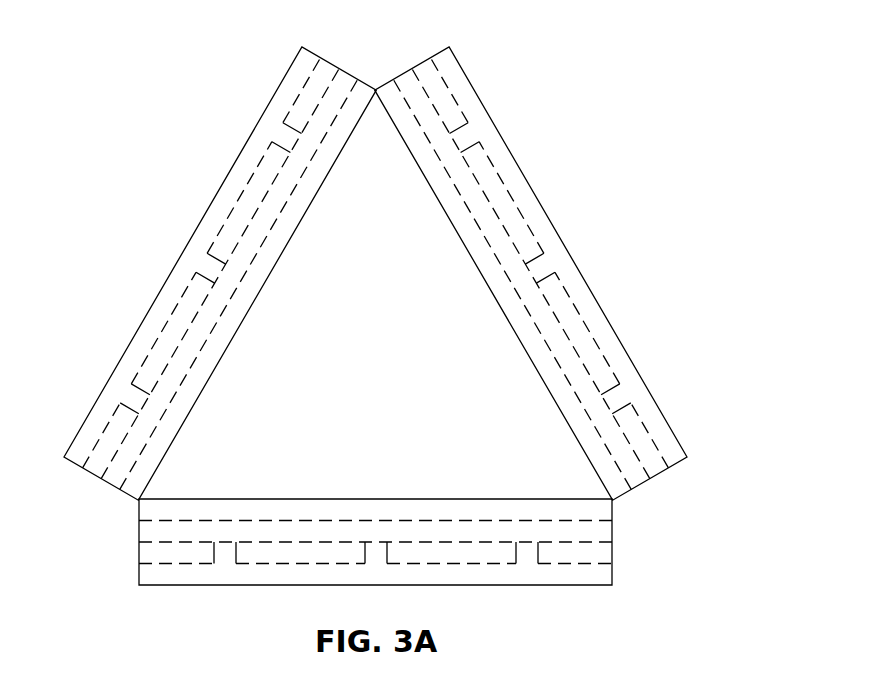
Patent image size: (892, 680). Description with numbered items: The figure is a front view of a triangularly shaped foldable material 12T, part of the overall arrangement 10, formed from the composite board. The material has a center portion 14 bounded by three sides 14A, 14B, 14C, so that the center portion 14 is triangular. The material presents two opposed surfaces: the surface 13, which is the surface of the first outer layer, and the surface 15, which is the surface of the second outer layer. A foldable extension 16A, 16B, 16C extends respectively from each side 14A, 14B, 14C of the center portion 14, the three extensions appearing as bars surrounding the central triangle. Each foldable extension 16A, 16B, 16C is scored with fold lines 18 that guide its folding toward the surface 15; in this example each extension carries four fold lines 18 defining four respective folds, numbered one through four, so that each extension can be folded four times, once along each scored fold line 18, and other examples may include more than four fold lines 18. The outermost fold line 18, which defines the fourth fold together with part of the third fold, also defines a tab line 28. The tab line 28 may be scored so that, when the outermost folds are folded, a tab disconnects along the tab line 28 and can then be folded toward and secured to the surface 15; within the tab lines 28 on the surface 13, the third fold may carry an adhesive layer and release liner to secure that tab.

The fluidic assembly 10 is at (382, 330).
The triangularly shaped foldable material 12T is at (163, 177).
The surface 13 is at (550, 478).
The center portion 14 is at (384, 364).
The side 14A is at (478, 263).
The side 14B is at (310, 197).
The side 14C is at (173, 499).
The surface 15 is at (139, 499).
The foldable extension 16A is at (628, 355).
The foldable extension 16B is at (332, 62).
The foldable extension 16C is at (616, 553).
The fold line 18 is at (495, 170).
The tab line 28 is at (452, 110).